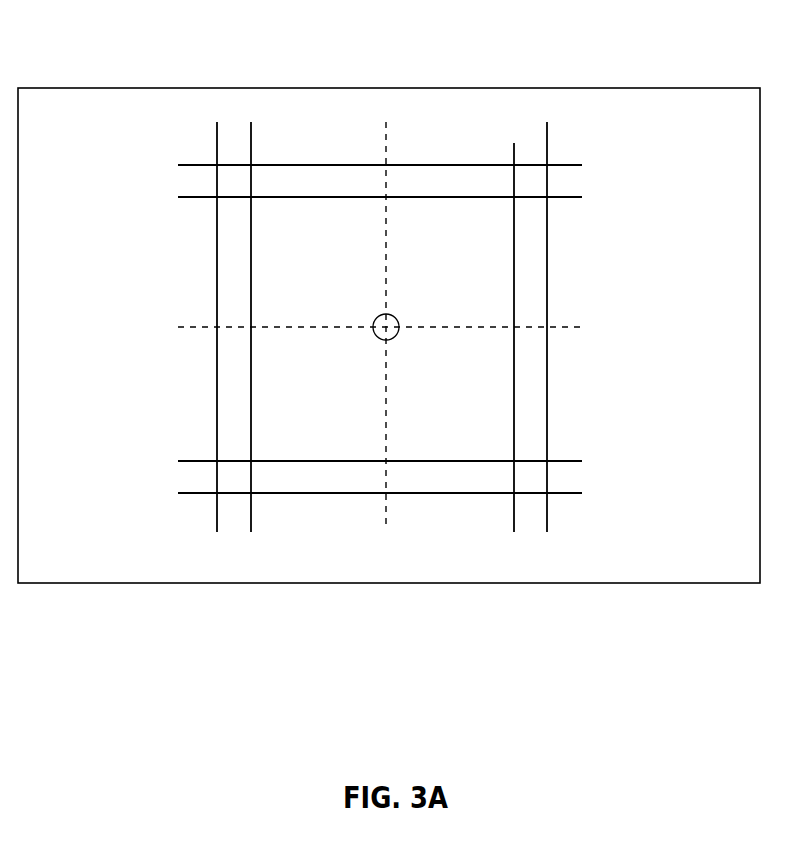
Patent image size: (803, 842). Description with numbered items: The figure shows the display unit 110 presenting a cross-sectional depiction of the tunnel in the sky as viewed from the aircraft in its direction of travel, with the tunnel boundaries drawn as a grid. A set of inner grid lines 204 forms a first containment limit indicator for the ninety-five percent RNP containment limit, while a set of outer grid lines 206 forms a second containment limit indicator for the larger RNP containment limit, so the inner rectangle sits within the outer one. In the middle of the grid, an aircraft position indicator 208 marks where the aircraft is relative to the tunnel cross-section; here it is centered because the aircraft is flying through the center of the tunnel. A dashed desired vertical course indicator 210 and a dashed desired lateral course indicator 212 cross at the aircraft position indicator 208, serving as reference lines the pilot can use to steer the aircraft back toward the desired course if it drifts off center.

The display unit 110 is at (127, 88).
The inner grid lines 204 is at (198, 197).
The outer grid lines 206 is at (217, 133).
The aircraft position indicator 208 is at (398, 337).
The desired vertical course indicator 210 is at (571, 327).
The desired lateral course indicator 212 is at (388, 142).